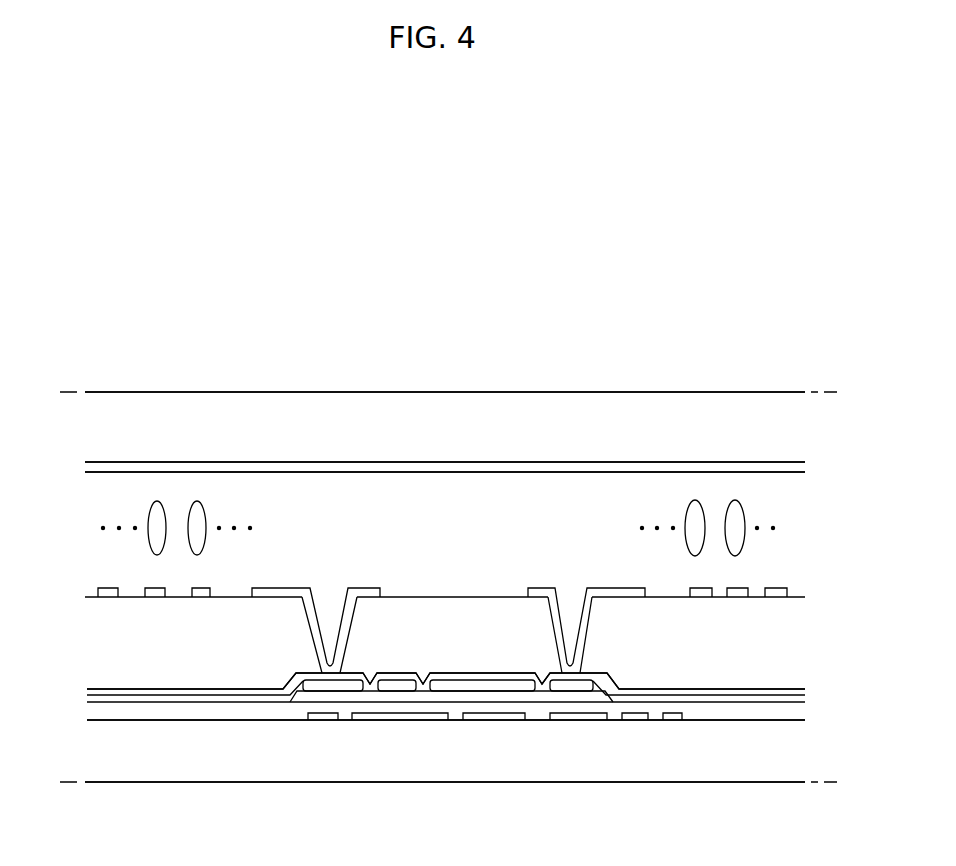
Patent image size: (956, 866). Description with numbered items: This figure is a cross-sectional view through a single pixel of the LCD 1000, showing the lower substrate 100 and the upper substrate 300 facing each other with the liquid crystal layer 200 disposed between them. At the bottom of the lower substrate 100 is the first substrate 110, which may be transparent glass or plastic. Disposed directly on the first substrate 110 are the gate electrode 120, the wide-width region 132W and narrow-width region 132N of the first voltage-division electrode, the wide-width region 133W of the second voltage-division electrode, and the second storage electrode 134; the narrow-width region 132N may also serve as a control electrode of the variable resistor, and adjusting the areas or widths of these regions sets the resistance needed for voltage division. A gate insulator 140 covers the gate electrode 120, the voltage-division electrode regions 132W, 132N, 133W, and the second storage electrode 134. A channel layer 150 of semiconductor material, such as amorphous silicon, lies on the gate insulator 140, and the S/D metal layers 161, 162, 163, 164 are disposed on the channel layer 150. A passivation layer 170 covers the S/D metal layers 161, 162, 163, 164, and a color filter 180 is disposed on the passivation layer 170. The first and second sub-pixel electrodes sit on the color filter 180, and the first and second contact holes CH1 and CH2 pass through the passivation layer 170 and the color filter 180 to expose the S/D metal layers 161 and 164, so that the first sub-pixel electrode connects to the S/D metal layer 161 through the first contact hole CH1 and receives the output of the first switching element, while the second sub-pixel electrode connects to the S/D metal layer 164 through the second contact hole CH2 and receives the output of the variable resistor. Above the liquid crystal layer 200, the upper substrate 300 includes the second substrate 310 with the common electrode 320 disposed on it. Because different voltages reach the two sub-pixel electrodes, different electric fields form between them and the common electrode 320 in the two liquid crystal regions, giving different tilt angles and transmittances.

The LCD 1000 is at (760, 348).
The upper substrate 300 is at (85, 393).
The second substrate 310 is at (403, 415).
The common electrode 320 is at (519, 465).
The liquid crystal layer 200 is at (85, 472).
The first contact hole CH1 is at (334, 596).
The second contact hole CH2 is at (568, 596).
The lower substrate 100 is at (85, 597).
The color filter 180 is at (140, 655).
The passivation layer 170 is at (693, 690).
The S/D metal layer 161 is at (355, 679).
The S/D metal layer 162 is at (408, 679).
The S/D metal layer 163 is at (475, 679).
The S/D metal layer 164 is at (588, 679).
The channel layer 150 is at (349, 697).
The gate insulator 140 is at (210, 712).
The wide-width region 132W is at (322, 715).
The gate electrode 120 is at (418, 717).
The narrow-width region 132N is at (490, 717).
The wide-width region 133W is at (573, 717).
The second storage electrode 134 is at (670, 718).
The first substrate 110 is at (757, 763).